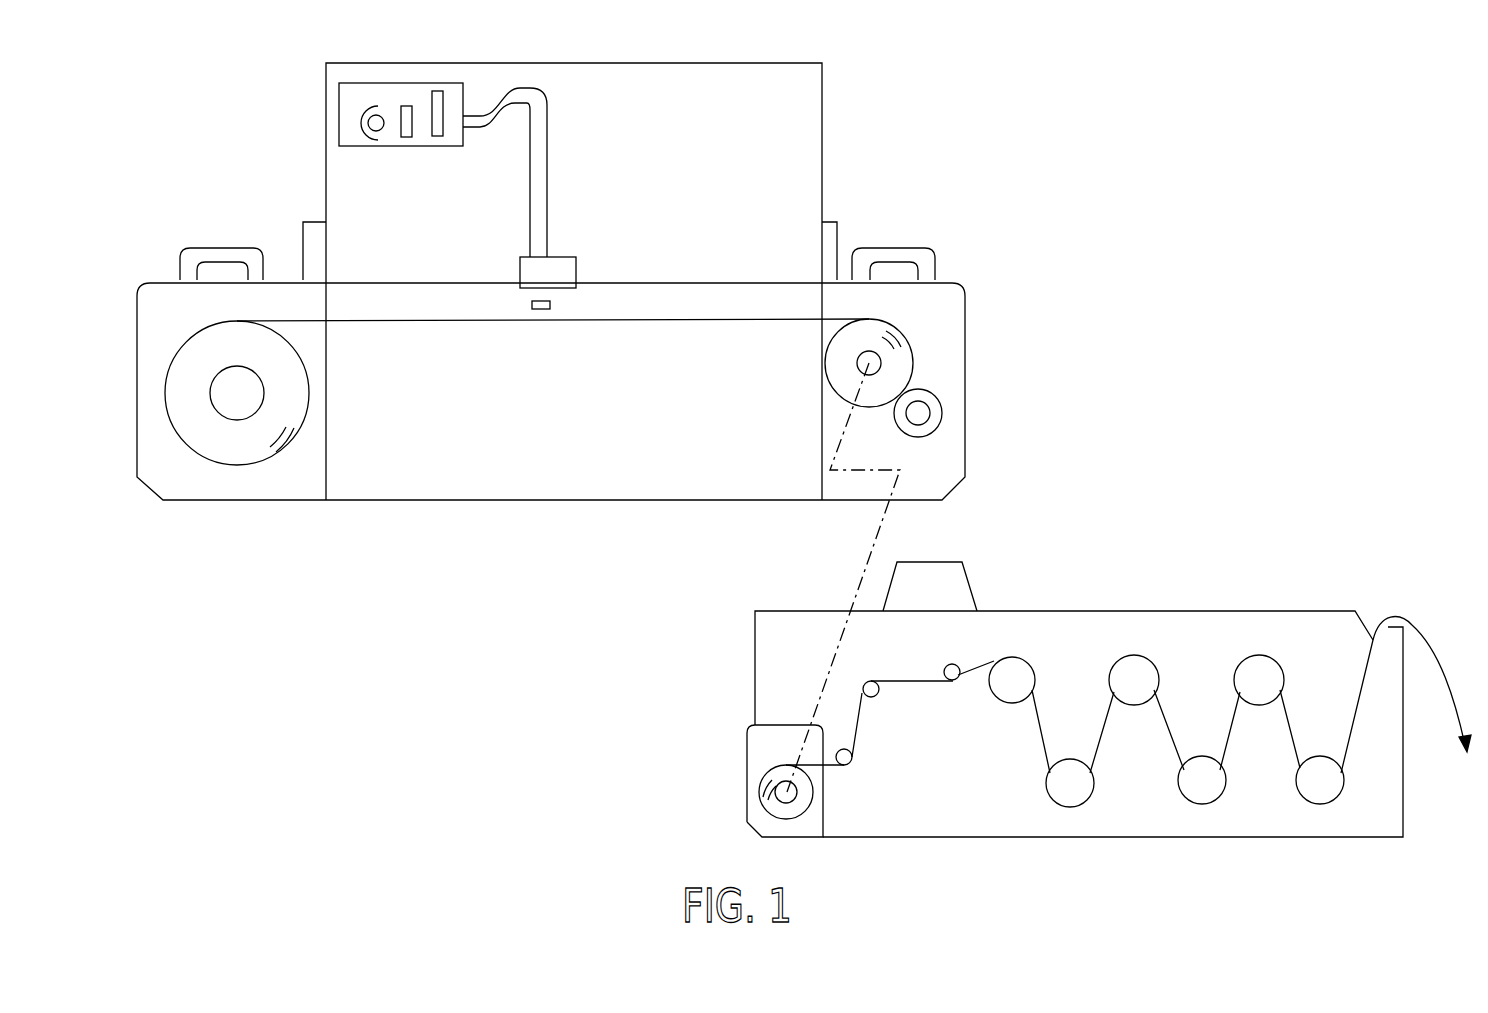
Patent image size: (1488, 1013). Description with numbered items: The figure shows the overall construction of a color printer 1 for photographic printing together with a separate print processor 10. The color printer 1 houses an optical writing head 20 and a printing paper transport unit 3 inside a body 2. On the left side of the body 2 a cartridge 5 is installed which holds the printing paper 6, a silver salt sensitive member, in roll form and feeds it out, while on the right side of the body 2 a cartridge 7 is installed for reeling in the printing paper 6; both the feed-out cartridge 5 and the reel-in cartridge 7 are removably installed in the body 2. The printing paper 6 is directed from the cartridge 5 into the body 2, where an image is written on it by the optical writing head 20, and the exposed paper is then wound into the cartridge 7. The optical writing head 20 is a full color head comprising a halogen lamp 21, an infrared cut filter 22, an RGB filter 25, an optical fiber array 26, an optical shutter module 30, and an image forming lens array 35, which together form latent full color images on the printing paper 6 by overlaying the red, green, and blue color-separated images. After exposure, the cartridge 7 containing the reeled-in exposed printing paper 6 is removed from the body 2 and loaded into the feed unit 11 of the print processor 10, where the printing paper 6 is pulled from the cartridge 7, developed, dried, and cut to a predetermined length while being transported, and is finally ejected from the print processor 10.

The color printer 1 is at (893, 78).
The body 2 is at (827, 118).
The printing paper transport unit 3 is at (635, 326).
The cartridge 5 is at (219, 506).
The printing paper 6 is at (309, 397).
The cartridge 7 is at (970, 312).
The print processor 10 is at (1214, 586).
The feed unit 11 is at (797, 725).
The optical writing head 20 is at (652, 112).
The halogen lamp 21 is at (378, 133).
The infrared cut filter 22 is at (407, 137).
The RGB filter 25 is at (438, 140).
The optical fiber array 26 is at (548, 140).
The optical shutter module 30 is at (520, 268).
The image forming lens array 35 is at (532, 305).